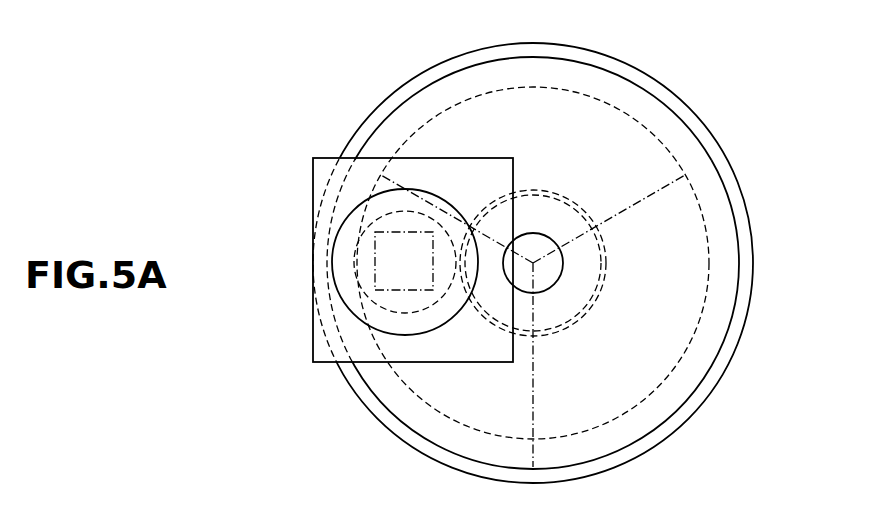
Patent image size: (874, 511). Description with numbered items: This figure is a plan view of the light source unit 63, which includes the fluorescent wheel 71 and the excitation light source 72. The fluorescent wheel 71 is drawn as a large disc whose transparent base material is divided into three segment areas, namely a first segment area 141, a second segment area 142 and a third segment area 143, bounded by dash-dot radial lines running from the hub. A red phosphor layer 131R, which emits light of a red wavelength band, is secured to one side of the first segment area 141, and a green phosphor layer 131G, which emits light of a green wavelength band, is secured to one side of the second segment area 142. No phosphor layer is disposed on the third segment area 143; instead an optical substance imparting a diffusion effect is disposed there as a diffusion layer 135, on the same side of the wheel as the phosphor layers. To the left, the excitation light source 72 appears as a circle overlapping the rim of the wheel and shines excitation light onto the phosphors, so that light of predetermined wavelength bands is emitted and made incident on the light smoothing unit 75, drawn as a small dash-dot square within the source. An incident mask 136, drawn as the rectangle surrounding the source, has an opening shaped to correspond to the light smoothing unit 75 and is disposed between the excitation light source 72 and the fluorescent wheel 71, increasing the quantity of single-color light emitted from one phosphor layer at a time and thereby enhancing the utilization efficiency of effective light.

The light source unit 63 is at (703, 80).
The fluorescent wheel 71 is at (712, 428).
The excitation light source 72 is at (392, 190).
The light smoothing unit 75 is at (390, 273).
The red phosphor layer 131R is at (437, 143).
The green phosphor layer 131G is at (423, 382).
The diffusion layer 135 is at (667, 260).
The incident mask 136 is at (323, 236).
The first segment area 141 is at (432, 102).
The second segment area 142 is at (427, 420).
The third segment area 143 is at (723, 290).